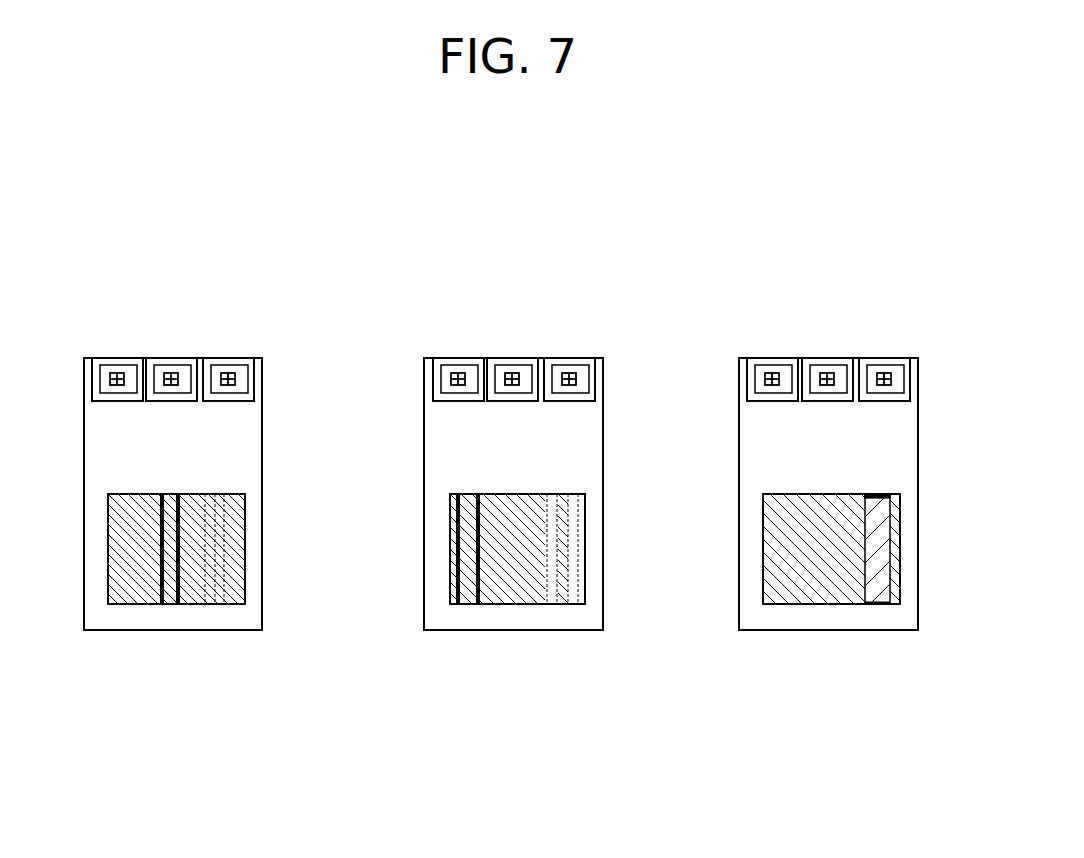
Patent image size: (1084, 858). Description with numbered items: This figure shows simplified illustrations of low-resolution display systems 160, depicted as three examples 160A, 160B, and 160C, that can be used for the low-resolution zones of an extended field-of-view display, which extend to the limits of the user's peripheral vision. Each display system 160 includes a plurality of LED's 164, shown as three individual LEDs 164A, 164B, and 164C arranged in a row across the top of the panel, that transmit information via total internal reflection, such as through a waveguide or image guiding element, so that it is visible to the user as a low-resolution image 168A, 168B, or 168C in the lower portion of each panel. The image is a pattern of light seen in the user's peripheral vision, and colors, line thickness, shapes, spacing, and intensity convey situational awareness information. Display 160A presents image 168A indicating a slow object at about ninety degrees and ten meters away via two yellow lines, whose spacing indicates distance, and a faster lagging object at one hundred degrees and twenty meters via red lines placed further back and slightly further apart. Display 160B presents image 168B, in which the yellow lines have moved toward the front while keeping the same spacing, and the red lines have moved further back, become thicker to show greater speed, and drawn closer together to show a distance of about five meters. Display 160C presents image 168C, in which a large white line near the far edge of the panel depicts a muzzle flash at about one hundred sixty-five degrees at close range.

The low-resolution display system 160 is at (575, 282).
The display 160A is at (220, 300).
The display 160B is at (482, 305).
The display 160C is at (815, 300).
The LED's 164 is at (165, 340).
The LED 164A is at (120, 358).
The LED 164B is at (188, 357).
The LED 164C is at (222, 357).
The low-resolution image 168A is at (275, 572).
The low-resolution image 168B is at (622, 546).
The low-resolution image 168C is at (877, 618).